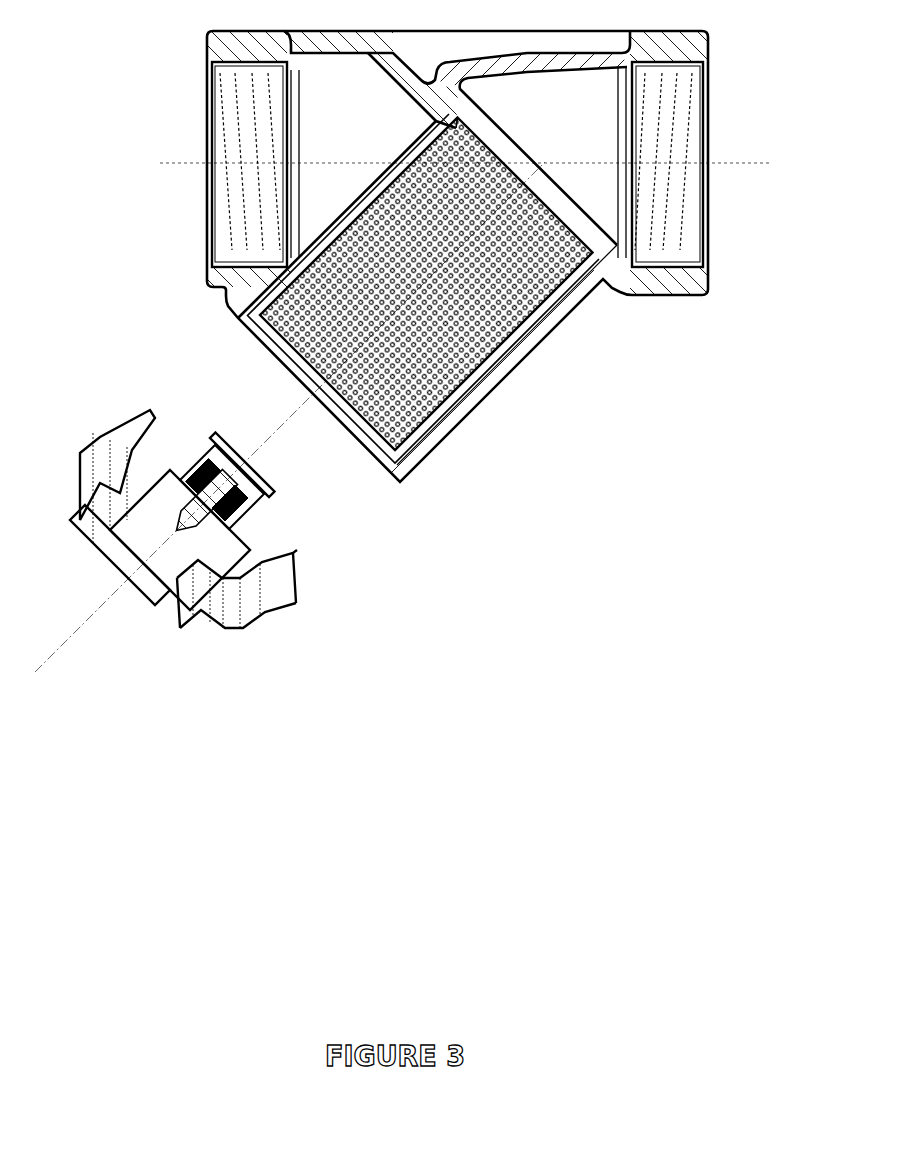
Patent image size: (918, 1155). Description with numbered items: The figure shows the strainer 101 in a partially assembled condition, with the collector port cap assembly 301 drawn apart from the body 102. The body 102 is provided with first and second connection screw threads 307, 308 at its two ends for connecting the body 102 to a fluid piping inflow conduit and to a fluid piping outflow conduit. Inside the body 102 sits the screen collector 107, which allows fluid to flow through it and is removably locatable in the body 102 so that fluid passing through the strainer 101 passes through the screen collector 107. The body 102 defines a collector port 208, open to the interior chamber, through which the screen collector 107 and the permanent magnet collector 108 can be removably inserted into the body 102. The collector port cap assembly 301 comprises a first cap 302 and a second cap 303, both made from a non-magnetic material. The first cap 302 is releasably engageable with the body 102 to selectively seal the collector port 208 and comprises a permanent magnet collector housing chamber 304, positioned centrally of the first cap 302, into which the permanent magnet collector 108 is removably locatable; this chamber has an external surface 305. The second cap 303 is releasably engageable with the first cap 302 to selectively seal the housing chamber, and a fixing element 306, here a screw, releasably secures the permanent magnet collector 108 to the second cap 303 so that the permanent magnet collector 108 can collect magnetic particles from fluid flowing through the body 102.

The strainer 101 is at (608, 752).
The body 102 is at (520, 343).
The screen collector 107 is at (455, 393).
The permanent magnet collector 108 is at (187, 465).
The collector port 208 is at (212, 312).
The collector port cap assembly 301 is at (345, 687).
The first cap 302 is at (203, 597).
The second cap 303 is at (153, 613).
The permanent magnet collector housing chamber 304 is at (262, 485).
The external surface 305 is at (268, 475).
The fixing element 306 is at (228, 447).
The first connection screw thread 307 is at (690, 97).
The second connection screw thread 308 is at (225, 86).